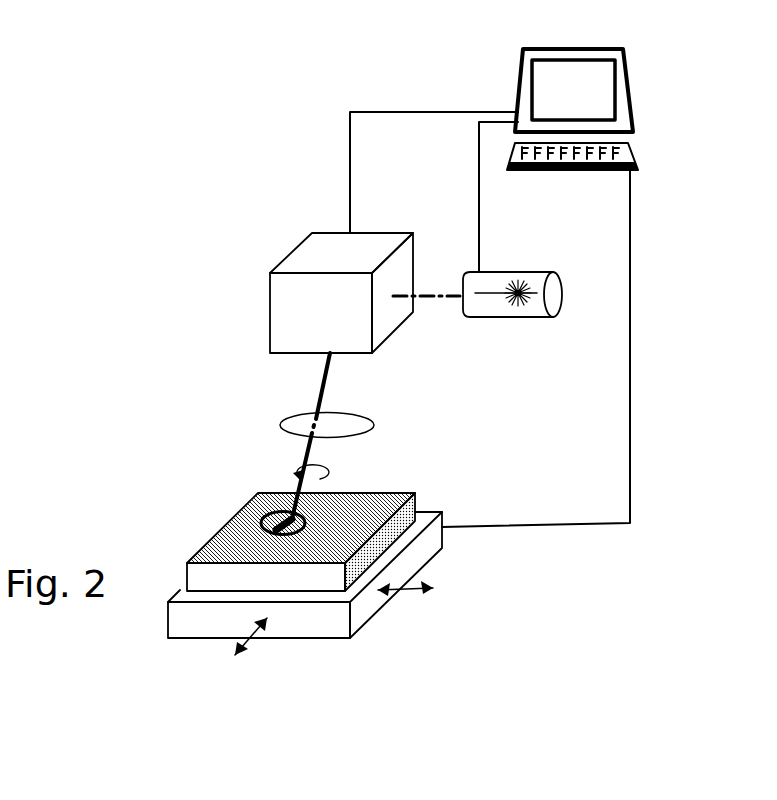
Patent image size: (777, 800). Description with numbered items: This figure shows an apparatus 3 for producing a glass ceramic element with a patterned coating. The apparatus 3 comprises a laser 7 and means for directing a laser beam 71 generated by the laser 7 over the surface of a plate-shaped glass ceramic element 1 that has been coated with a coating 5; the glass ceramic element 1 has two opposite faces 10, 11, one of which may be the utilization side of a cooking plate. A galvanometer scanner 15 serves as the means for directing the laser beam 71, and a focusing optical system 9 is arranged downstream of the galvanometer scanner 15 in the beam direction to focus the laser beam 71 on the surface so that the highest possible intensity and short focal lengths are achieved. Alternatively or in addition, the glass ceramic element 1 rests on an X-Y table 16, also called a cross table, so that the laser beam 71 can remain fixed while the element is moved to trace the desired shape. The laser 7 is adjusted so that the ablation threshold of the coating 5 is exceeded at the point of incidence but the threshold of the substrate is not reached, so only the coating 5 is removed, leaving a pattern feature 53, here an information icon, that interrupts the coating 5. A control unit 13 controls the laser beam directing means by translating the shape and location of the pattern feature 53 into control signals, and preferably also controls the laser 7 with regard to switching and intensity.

The glass ceramic element 1 is at (367, 562).
The apparatus 3 is at (79, 356).
The coating 5 is at (365, 505).
The laser 7 is at (487, 320).
The focusing optical system 9 is at (280, 422).
The face 10 is at (213, 547).
The face 11 is at (323, 590).
The control unit 13 is at (523, 53).
The galvanometer scanner 15 is at (299, 245).
The X-Y table 16 is at (372, 610).
The pattern feature 53 is at (248, 507).
The laser beam 71 is at (450, 298).